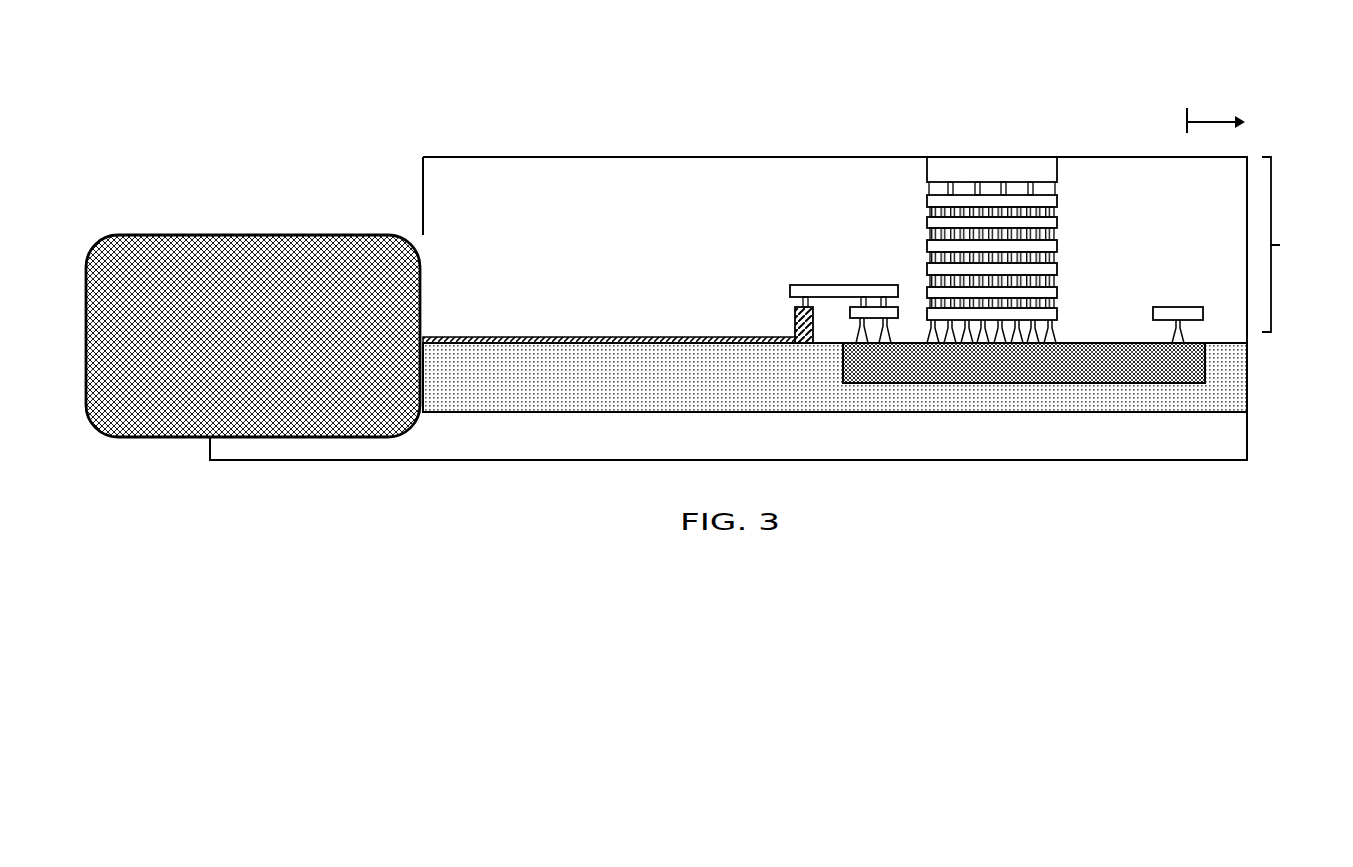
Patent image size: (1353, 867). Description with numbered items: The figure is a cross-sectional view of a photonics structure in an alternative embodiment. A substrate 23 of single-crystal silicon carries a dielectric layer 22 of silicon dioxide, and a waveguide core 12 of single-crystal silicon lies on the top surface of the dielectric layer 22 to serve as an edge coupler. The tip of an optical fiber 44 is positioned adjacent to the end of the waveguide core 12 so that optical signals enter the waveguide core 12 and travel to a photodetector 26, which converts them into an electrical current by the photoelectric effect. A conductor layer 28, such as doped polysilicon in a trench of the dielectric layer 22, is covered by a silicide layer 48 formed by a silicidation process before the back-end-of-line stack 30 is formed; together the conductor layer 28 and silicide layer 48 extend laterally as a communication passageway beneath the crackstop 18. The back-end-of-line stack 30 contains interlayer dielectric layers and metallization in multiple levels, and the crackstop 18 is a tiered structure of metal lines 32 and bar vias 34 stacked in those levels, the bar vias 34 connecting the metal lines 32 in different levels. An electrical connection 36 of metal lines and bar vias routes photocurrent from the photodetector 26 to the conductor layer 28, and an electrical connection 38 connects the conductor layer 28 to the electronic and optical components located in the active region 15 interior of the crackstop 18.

The waveguide core 12 is at (601, 338).
The active region 15 is at (1216, 109).
The crackstop 18 is at (957, 188).
The dielectric layer 22 is at (1195, 397).
The substrate 23 is at (1195, 436).
The photodetector 26 is at (797, 325).
The conductor layer 28 is at (1153, 366).
The back-end-of-line stack 30 is at (1289, 244).
The metal lines 32 is at (943, 203).
The bar vias 34 is at (955, 240).
The electrical connection 36 is at (822, 262).
The electrical connection 38 is at (1162, 290).
The optical fiber 44 is at (236, 235).
The silicide layer 48 is at (967, 348).